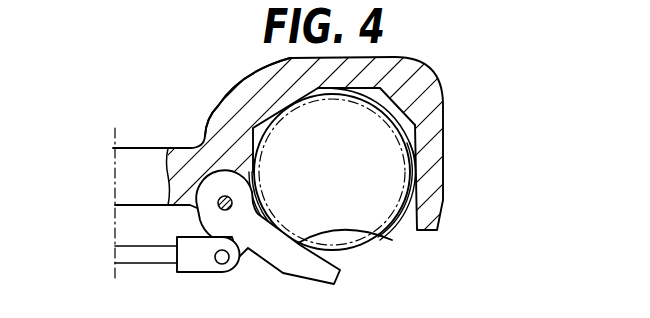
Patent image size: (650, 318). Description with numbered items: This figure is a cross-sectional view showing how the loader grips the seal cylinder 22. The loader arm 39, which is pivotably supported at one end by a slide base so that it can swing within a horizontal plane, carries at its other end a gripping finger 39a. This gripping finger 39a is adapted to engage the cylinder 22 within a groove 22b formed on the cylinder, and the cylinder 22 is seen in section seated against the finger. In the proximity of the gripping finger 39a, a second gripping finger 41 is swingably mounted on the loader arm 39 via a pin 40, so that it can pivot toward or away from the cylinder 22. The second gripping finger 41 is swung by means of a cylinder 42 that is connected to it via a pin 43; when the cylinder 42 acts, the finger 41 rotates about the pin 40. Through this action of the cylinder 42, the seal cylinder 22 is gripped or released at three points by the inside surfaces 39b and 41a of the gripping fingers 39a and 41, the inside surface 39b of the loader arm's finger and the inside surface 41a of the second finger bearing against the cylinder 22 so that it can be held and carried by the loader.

The seal cylinder 22 is at (378, 187).
The groove 22b is at (410, 219).
The loader arm 39 is at (125, 185).
The gripping finger 39a is at (217, 108).
The inside surface 39b is at (372, 123).
The pin 40 is at (218, 202).
The second gripping finger 41 is at (197, 217).
The inside surface 41a is at (392, 240).
The cylinder 42 is at (133, 249).
The pin 43 is at (214, 262).